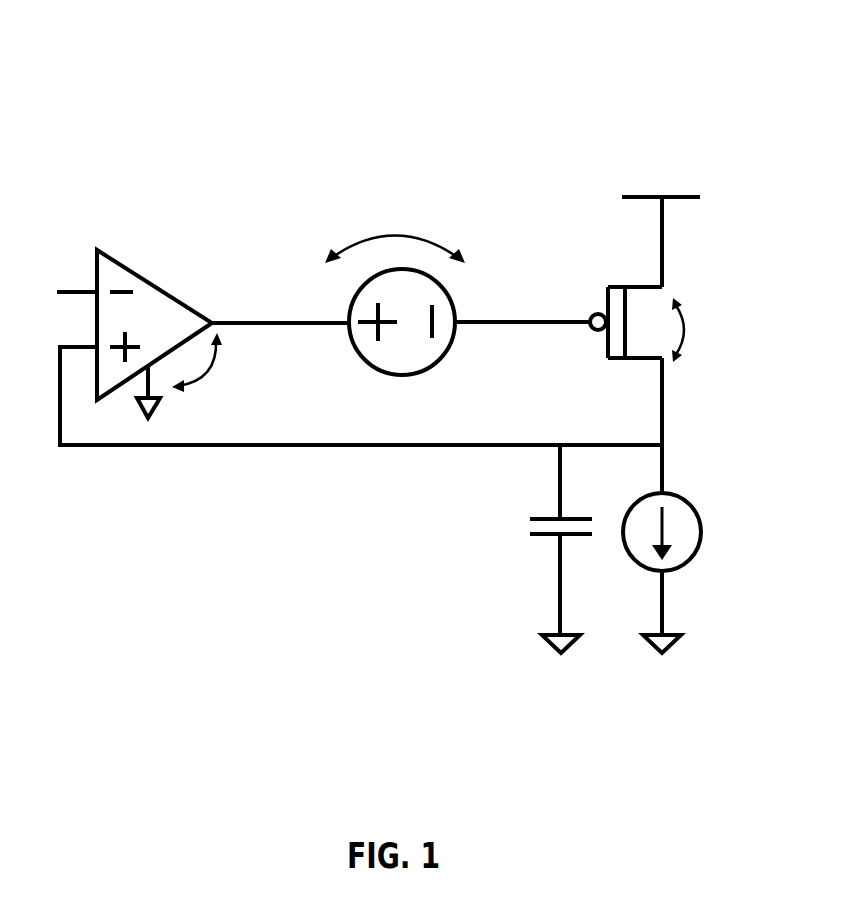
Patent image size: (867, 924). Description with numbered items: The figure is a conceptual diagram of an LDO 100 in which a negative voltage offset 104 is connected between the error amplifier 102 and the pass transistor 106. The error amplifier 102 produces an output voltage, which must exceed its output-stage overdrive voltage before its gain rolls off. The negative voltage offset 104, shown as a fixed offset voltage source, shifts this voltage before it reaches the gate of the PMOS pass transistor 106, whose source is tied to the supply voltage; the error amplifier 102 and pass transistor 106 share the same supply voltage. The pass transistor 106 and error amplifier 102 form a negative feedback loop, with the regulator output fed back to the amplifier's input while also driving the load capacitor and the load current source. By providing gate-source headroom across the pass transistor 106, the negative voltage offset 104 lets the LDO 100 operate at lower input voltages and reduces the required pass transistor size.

The LDO 100 is at (704, 46).
The error amplifier 102 is at (115, 255).
The negative voltage offset 104 is at (356, 350).
The pass transistor 106 is at (608, 356).